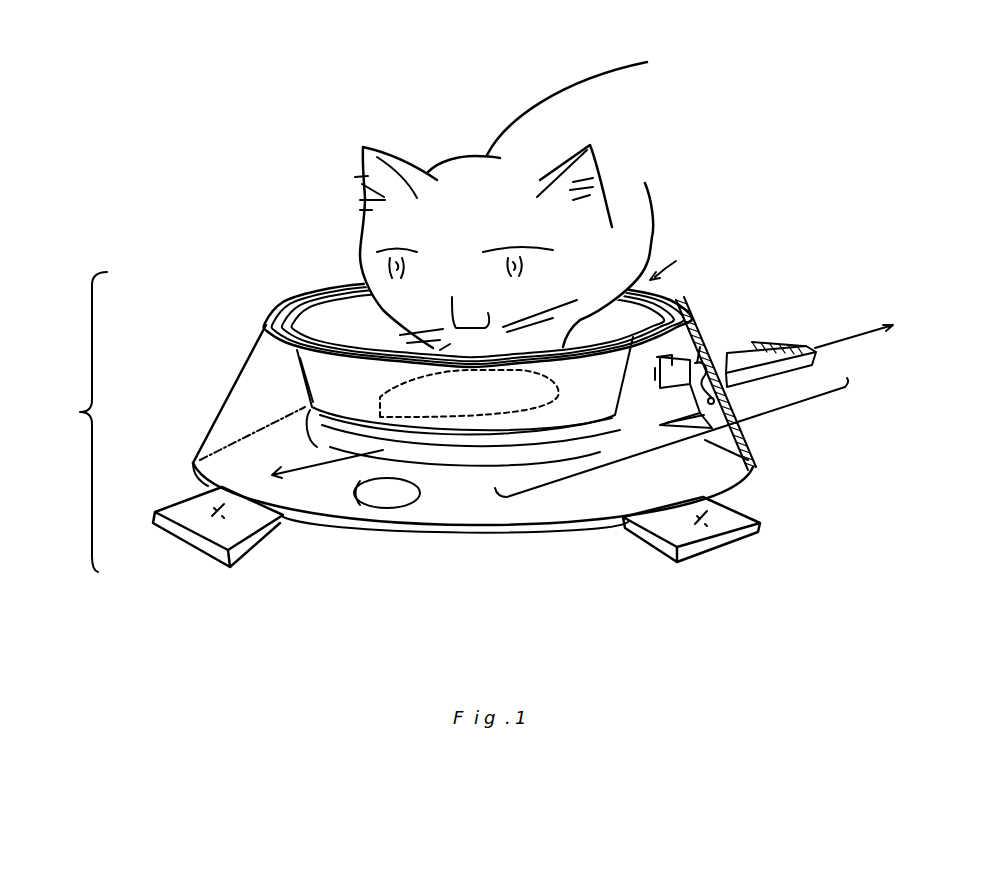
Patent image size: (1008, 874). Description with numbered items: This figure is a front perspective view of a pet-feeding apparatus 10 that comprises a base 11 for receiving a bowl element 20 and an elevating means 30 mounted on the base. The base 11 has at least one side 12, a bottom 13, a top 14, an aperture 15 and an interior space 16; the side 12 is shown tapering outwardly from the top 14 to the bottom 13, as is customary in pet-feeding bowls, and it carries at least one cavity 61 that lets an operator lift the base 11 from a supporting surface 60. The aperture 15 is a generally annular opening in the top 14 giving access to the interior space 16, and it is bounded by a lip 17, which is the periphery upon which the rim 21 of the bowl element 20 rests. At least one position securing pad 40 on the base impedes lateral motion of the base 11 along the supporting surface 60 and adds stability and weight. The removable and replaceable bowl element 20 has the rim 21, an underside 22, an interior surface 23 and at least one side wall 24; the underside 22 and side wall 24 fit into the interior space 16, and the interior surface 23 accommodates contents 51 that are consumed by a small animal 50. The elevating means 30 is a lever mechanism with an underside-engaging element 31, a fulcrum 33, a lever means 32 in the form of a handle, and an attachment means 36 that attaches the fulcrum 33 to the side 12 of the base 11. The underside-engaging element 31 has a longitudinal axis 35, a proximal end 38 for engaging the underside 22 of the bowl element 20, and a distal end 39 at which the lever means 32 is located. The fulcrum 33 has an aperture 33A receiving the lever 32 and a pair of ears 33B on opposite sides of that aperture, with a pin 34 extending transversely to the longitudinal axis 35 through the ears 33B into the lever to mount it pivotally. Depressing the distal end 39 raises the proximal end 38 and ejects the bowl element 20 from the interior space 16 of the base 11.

The apparatus 10 is at (80, 412).
The base 11 is at (248, 386).
The side 12 is at (685, 333).
The bottom 13 is at (460, 523).
The top 14 is at (268, 322).
The aperture 15 is at (675, 263).
The interior space 16 is at (300, 451).
The lip 17 is at (284, 306).
The bowl element 20 is at (350, 325).
The rim 21 is at (305, 294).
The underside 22 is at (312, 437).
The interior surface 23 is at (357, 392).
The side wall 24 is at (300, 384).
The elevating means 30 is at (768, 419).
The underside-engaging element 31 is at (460, 453).
The lever means 32 is at (775, 373).
The fulcrum 33 is at (664, 430).
The aperture 33A is at (700, 347).
The ears 33B is at (655, 374).
The pin 34 is at (697, 424).
The longitudinal axis 35 is at (853, 337).
The attachment means 36 is at (673, 362).
The proximal end 38 is at (413, 437).
The distal end 39 is at (779, 340).
The position securing pad 40 is at (240, 550).
The small animal 50 is at (478, 230).
The contents 51 is at (483, 406).
The supporting surface 60 is at (582, 591).
The cavity 61 is at (398, 504).